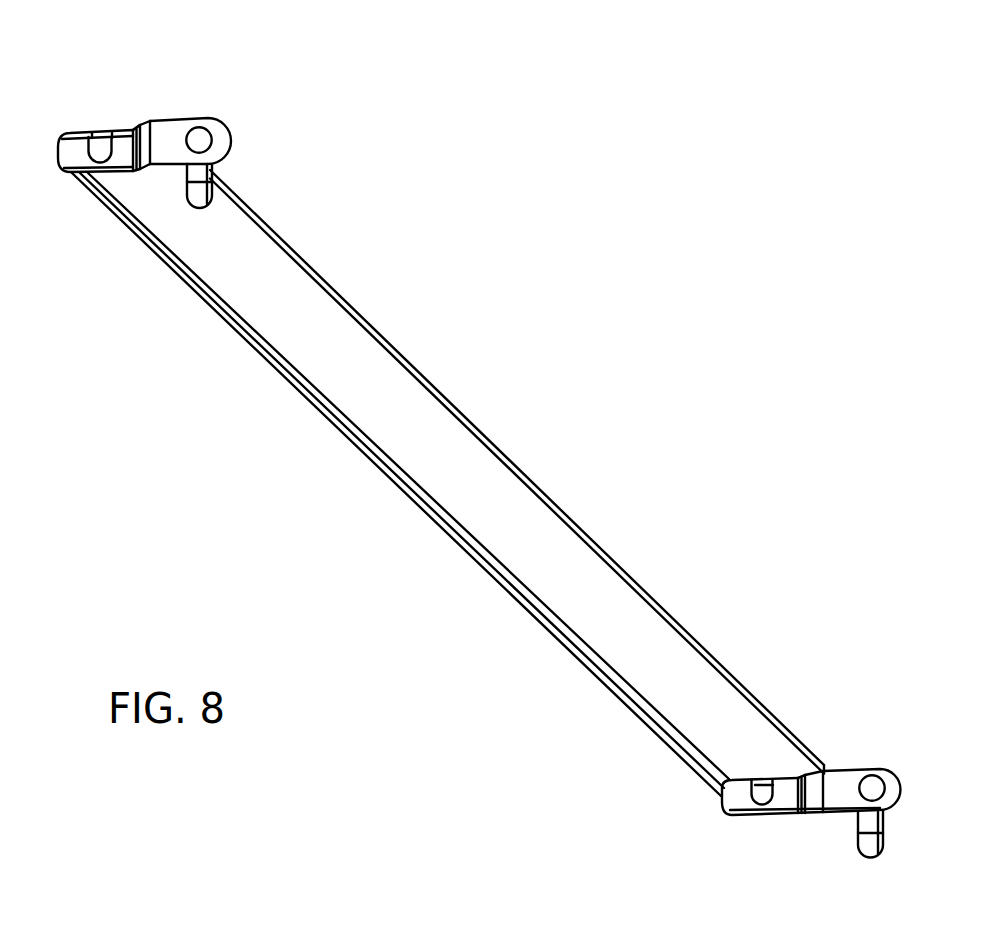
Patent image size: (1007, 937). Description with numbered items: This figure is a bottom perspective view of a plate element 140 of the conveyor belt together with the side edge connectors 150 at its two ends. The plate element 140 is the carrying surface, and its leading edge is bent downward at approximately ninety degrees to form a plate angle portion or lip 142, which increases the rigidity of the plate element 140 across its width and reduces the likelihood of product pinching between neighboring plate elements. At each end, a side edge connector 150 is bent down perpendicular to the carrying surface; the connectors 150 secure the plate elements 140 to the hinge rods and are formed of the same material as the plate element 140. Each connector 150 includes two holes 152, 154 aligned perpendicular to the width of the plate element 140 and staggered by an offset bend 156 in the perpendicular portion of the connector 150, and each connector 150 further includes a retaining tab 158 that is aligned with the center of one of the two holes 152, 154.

The plate element 140 is at (552, 548).
The plate angle portion or lip 142 is at (328, 404).
The side edge connector 150 is at (790, 817).
The hole 152 is at (200, 140).
The hole 154 is at (100, 149).
The offset bend 156 is at (139, 134).
The retaining tab 158 is at (198, 193).